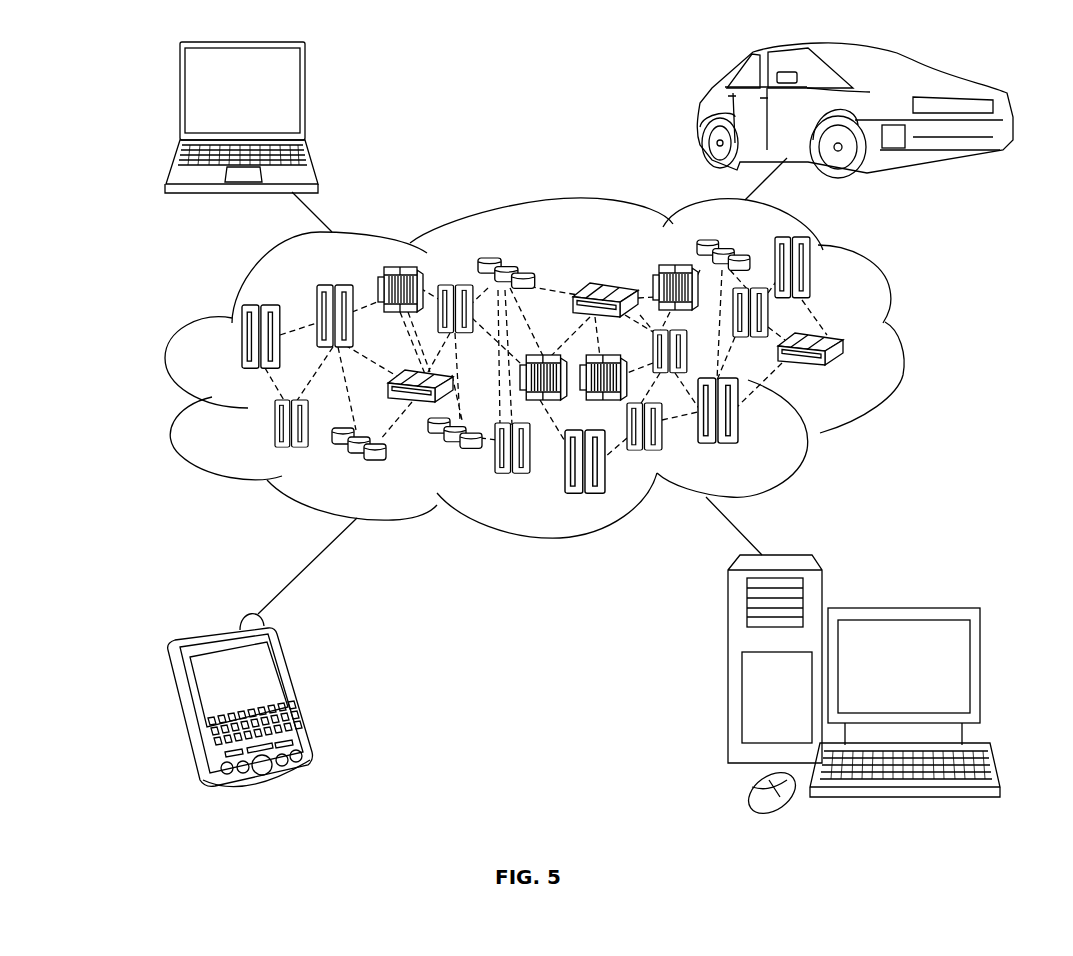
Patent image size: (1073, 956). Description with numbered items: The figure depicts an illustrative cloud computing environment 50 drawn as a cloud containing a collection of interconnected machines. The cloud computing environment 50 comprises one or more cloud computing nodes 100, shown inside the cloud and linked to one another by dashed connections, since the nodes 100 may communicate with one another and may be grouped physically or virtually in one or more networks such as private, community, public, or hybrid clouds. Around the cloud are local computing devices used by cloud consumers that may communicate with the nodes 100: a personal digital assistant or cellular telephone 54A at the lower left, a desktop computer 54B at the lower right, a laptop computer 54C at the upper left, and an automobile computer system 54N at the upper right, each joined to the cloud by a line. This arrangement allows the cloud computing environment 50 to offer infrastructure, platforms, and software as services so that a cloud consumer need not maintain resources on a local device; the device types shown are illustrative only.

The cloud computing environment 50 is at (562, 386).
The cloud computing nodes 100 is at (848, 373).
The personal digital assistant (PDA) or cellular telephone 54A is at (297, 693).
The desktop computer 54B is at (902, 608).
The laptop computer 54C is at (305, 97).
The automobile computer system 54N is at (702, 112).